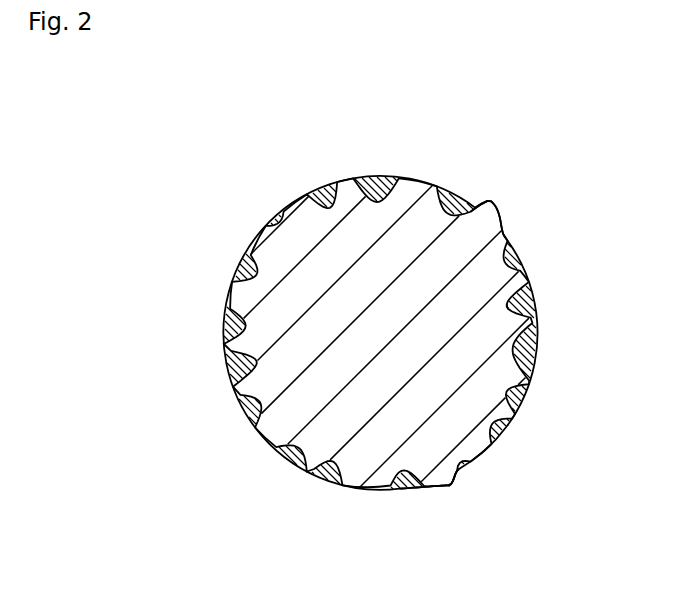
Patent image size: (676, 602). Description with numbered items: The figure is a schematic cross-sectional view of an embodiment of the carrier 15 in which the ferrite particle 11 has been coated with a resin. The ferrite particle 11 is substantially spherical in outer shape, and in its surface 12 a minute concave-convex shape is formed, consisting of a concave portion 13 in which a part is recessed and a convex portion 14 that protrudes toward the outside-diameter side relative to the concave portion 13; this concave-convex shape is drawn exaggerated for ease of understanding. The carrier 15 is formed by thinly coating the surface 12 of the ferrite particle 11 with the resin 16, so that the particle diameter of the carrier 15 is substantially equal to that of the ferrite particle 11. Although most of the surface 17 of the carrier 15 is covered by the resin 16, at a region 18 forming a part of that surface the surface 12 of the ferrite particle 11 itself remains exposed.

The ferrite particle 11 is at (440, 366).
The surface of the ferrite particle 12 is at (397, 134).
The concave portion 13 is at (460, 192).
The convex portion 14 is at (410, 188).
The carrier 15 is at (519, 189).
The resin 16 is at (464, 204).
The surface of the carrier 17 is at (531, 381).
The region 18 is at (429, 506).